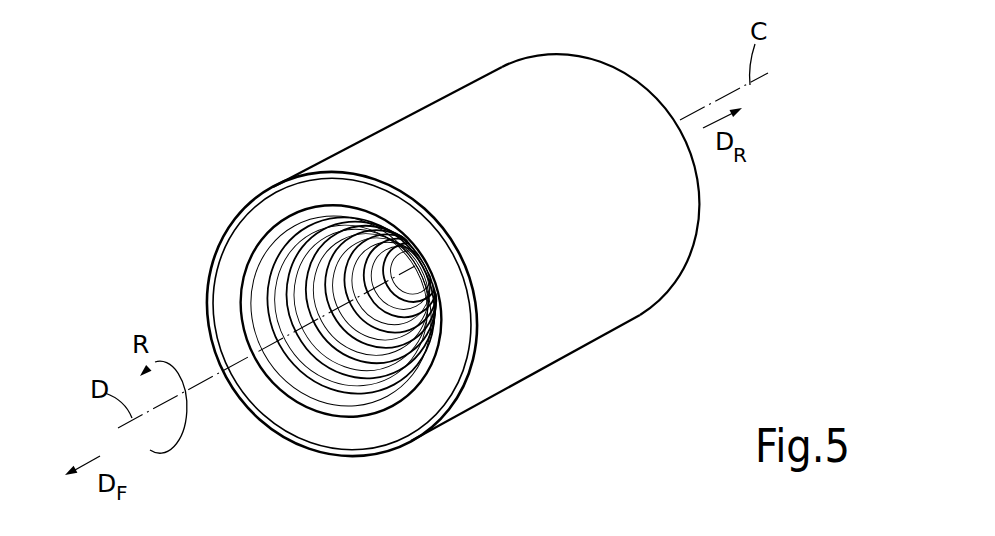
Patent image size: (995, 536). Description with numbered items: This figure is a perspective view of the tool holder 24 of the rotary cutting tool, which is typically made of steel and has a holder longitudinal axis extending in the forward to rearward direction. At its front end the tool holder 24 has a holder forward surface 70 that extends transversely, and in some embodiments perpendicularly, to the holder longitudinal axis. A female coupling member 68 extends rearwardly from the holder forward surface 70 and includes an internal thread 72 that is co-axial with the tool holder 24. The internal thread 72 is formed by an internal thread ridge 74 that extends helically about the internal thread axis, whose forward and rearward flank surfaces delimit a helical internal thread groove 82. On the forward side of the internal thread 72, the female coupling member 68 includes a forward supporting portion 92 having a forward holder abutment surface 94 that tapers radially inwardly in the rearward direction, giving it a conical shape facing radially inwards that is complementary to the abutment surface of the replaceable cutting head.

The tool holder 24 is at (236, 92).
The holder forward surface 70 is at (289, 196).
The forward supporting portion 92 is at (268, 284).
The forward holder abutment surface 94 is at (257, 312).
The internal thread groove 82 is at (407, 332).
The internal thread ridge 74 is at (425, 367).
The female coupling member 68 is at (317, 407).
The internal thread 72 is at (343, 400).